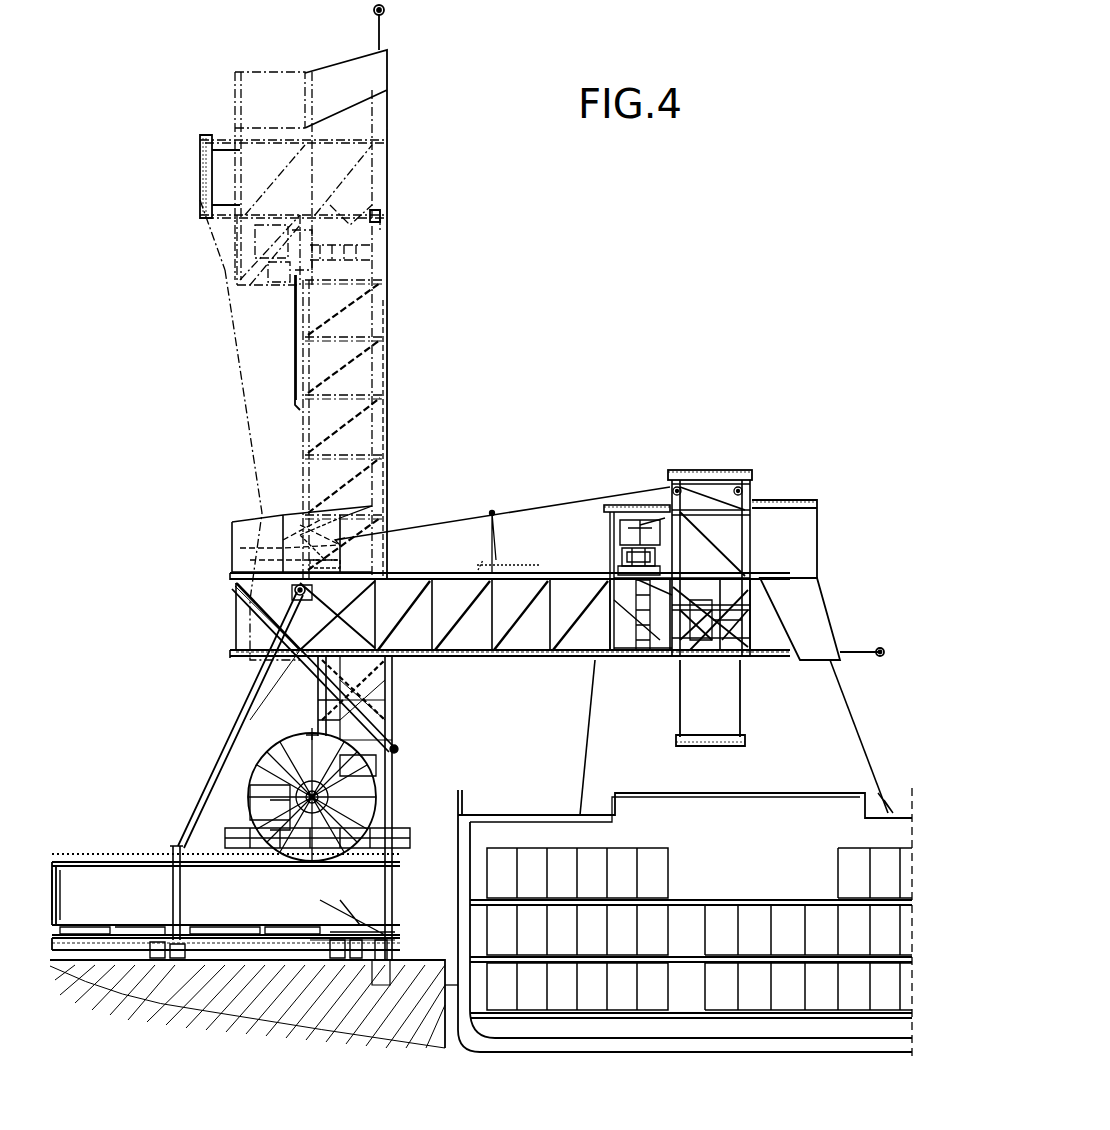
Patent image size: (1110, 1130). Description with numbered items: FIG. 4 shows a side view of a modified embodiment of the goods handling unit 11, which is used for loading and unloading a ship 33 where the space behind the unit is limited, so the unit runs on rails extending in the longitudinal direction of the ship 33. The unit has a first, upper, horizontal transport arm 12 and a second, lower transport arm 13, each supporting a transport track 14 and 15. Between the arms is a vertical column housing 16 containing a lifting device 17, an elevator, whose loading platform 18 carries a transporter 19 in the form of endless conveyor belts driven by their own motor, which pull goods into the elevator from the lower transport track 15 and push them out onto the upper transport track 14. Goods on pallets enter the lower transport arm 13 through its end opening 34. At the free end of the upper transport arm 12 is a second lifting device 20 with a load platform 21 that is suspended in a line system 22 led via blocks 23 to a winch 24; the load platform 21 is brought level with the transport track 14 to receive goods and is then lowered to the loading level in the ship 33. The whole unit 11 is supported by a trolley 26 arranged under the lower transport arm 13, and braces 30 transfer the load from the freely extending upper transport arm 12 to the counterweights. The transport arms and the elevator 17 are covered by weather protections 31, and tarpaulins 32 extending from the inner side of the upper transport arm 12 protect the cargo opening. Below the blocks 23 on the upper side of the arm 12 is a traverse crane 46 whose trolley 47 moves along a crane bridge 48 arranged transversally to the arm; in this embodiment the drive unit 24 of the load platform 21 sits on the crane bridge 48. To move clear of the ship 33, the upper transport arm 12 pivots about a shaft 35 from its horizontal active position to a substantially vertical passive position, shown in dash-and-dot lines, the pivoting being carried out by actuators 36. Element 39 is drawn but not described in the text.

The goods handling unit 11 is at (513, 370).
The upper transport arm 12 is at (418, 570).
The lower transport arm 13 is at (87, 848).
The transport track 14 is at (522, 660).
The transport track 15 is at (138, 922).
The column housing 16 is at (385, 776).
The lifting device 17 is at (385, 686).
The loading platform 18 is at (310, 922).
The transporter 19 is at (322, 960).
The second lifting device 20 is at (714, 477).
The load platform 21 is at (713, 747).
The line system 22 is at (560, 500).
The blocks 23 is at (745, 490).
The winch 24 is at (273, 562).
The trolley 26 is at (222, 940).
The braces 30 is at (238, 716).
The weather protections 31 is at (120, 855).
The tarpaulins 32 is at (590, 760).
The ship 33 is at (891, 813).
The end opening 34 is at (58, 880).
The shaft 35 is at (295, 590).
The actuators 36 is at (396, 735).
The brace 39 is at (318, 685).
The traverse crane 46 is at (640, 510).
The trolley 47 is at (620, 530).
The crane bridge 48 is at (617, 553).